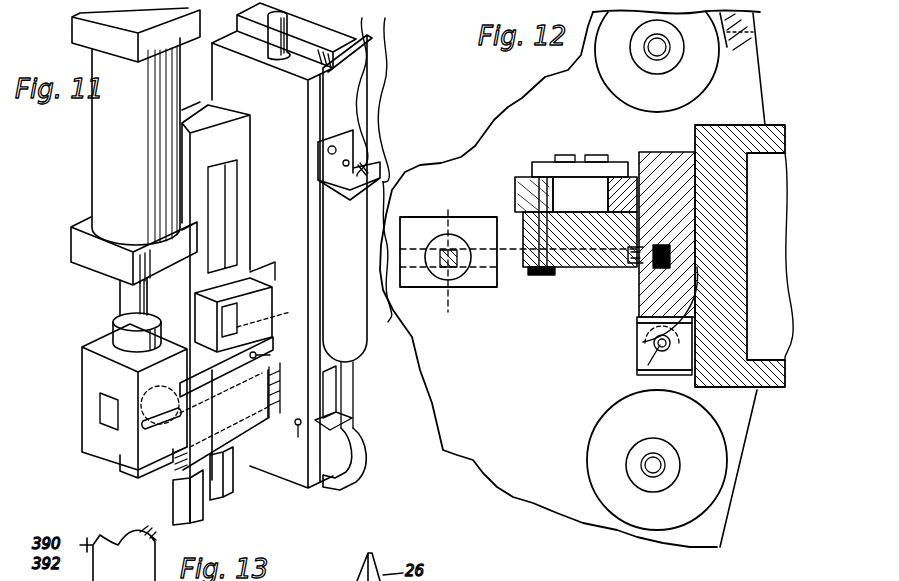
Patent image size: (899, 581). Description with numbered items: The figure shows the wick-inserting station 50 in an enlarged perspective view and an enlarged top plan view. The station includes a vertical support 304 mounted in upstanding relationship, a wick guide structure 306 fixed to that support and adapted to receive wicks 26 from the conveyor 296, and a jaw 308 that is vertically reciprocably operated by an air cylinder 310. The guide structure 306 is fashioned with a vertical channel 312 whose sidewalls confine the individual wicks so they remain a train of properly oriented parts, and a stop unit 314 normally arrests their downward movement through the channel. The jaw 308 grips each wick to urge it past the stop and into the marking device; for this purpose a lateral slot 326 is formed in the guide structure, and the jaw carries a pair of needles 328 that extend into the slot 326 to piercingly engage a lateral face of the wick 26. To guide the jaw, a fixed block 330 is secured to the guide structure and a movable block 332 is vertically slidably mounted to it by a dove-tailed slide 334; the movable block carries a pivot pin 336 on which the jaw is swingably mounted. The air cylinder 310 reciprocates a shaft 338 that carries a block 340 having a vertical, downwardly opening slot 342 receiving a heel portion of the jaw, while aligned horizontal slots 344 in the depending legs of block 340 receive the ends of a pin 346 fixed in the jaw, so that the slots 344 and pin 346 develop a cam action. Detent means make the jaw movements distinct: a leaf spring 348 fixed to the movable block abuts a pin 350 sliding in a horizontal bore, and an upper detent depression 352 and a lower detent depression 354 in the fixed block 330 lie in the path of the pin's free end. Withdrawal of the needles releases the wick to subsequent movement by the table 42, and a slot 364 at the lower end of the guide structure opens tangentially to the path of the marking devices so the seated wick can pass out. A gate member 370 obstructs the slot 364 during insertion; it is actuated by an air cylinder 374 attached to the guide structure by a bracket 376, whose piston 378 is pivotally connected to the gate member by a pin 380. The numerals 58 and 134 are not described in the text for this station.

In FIG. 11, the air cylinder 310 is at (100, 127).
In FIG. 11, the shaft 338 is at (130, 294).
In FIG. 12, the shaft 338 is at (449, 253).
In FIG. 11, the block 340 is at (83, 344).
In FIG. 12, the block 340 is at (420, 216).
In FIG. 11, the horizontal slots 344 is at (82, 388).
In FIG. 12, the horizontal slots 344 is at (460, 220).
In FIG. 11, the vertical, downwardly opening slot 342 is at (98, 418).
In FIG. 11, the pin 346 is at (146, 462).
In FIG. 12, the pin 346 is at (447, 292).
In FIG. 11, the jaw 308 is at (167, 476).
In FIG. 12, the jaw 308 is at (515, 278).
In FIG. 11, the wick-inserting station 50 is at (73, 457).
In FIG. 12, the wick-inserting station 50 is at (580, 382).
In FIG. 11, the fixed block 330 is at (256, 133).
In FIG. 12, the fixed block 330 is at (514, 171).
In FIG. 11, the conveyor 296 is at (290, 17).
In FIG. 11, the upper detent depression 352 is at (199, 192).
In FIG. 11, the dove-tailed slide 334 is at (233, 239).
In FIG. 11, the movable block 332 is at (272, 270).
In FIG. 12, the movable block 332 is at (559, 347).
In FIG. 11, the pivot pin 336 is at (278, 274).
In FIG. 11, the leaf spring 348 is at (236, 311).
In FIG. 12, the leaf spring 348 is at (551, 280).
In FIG. 11, the needles 328 is at (294, 296).
In FIG. 11, the lateral slot 326 is at (226, 418).
In FIG. 11, the piston 378 is at (277, 498).
In FIG. 11, the stop unit 314 is at (358, 331).
In FIG. 11, the bracket 376 is at (372, 100).
In FIG. 11, the vertical support 304 is at (365, 90).
In FIG. 12, the vertical support 304 is at (766, 392).
In FIG. 11, the wick guide structure 306 is at (380, 60).
In FIG. 12, the wick guide structure 306 is at (681, 148).
In FIG. 11, the pin 380 is at (349, 474).
In FIG. 11, the gate member 370 is at (321, 492).
In FIG. 12, the roller 58 is at (729, 42).
In FIG. 12, the wicks 26 is at (616, 275).
In FIG. 12, the lower detent depression 354 is at (537, 215).
In FIG. 12, the spacer block 134 is at (613, 171).
In FIG. 12, the pin 350 is at (490, 325).
In FIG. 12, the slot 364 is at (630, 347).
In FIG. 12, the vertical channel 312 is at (661, 351).
In FIG. 12, the air cylinder 374 is at (634, 372).
In FIG. 12, the table 42 is at (493, 399).